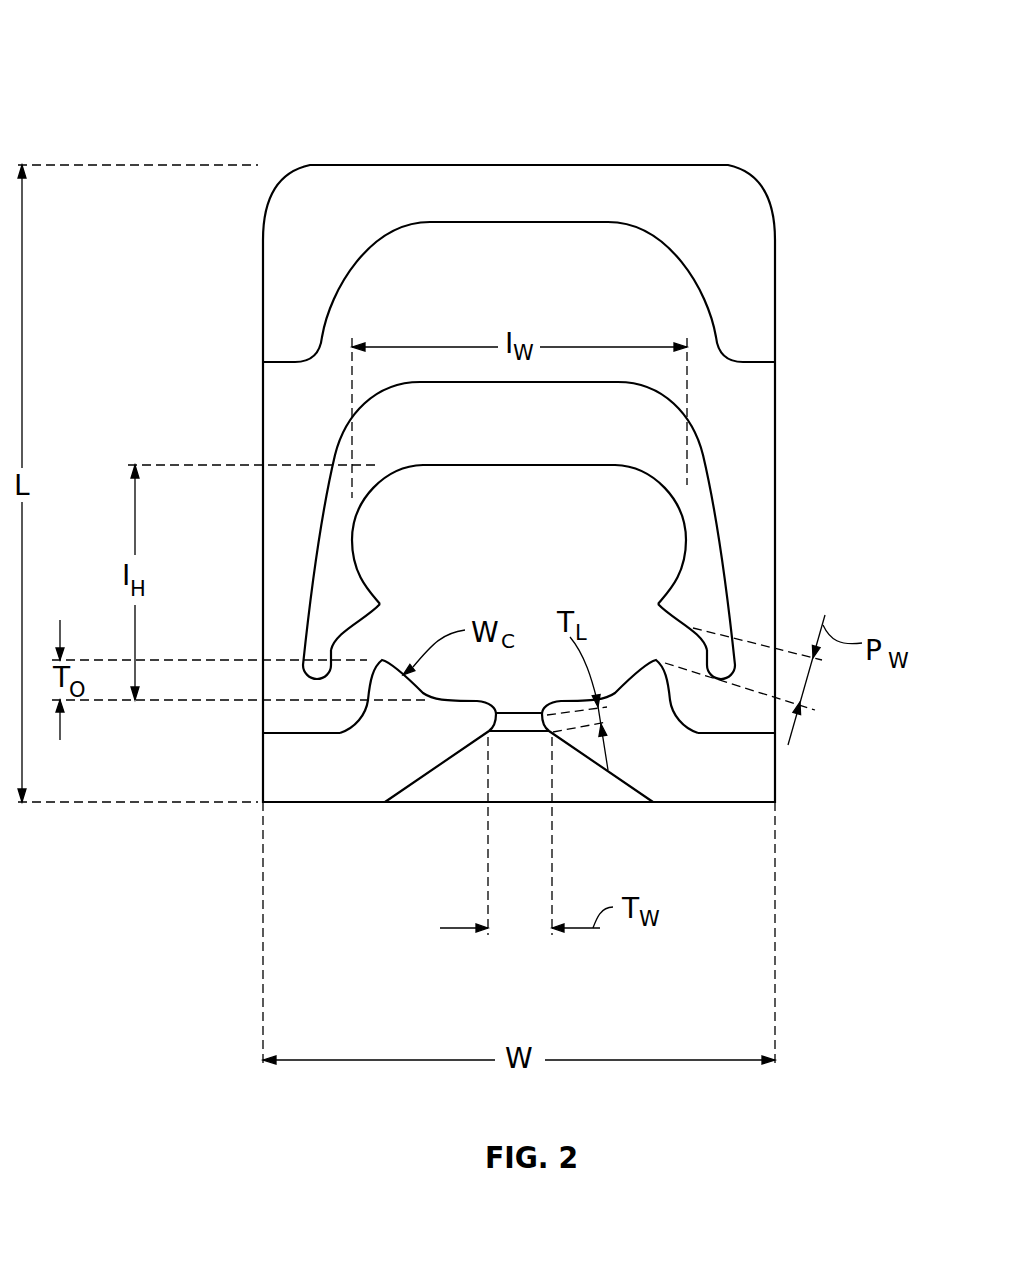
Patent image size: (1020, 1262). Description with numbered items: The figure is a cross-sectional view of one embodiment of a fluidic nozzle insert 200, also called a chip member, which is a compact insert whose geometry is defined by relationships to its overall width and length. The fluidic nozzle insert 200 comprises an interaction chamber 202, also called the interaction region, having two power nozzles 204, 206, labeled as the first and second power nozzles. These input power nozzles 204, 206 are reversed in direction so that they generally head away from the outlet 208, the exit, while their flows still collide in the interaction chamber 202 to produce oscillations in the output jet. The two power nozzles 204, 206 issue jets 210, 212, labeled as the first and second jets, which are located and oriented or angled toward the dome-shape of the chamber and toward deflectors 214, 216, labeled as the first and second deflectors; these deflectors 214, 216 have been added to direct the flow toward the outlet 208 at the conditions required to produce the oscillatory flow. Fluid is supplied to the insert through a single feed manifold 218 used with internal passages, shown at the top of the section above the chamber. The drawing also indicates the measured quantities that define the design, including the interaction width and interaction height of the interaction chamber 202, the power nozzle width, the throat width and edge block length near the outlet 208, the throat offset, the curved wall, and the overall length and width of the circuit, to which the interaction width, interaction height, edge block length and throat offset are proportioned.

The fluidic nozzle insert 200 is at (192, 56).
The interaction chamber 202 is at (543, 556).
The power nozzle 204 is at (345, 670).
The power nozzle 206 is at (690, 680).
The outlet 208 is at (520, 717).
The jet 210 is at (377, 643).
The jet 212 is at (660, 643).
The deflector 214 is at (332, 613).
The deflector 216 is at (690, 613).
The single feed manifold 218 is at (537, 250).